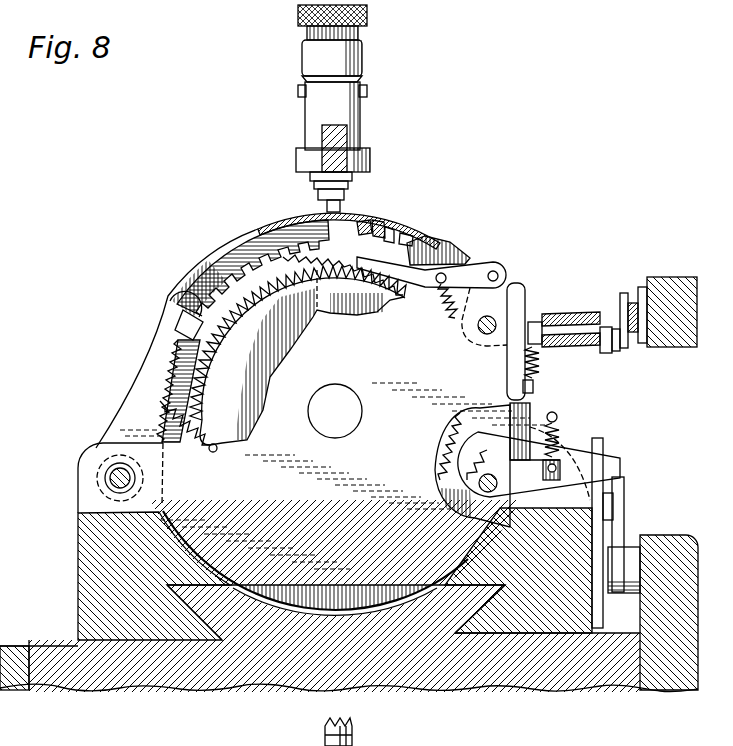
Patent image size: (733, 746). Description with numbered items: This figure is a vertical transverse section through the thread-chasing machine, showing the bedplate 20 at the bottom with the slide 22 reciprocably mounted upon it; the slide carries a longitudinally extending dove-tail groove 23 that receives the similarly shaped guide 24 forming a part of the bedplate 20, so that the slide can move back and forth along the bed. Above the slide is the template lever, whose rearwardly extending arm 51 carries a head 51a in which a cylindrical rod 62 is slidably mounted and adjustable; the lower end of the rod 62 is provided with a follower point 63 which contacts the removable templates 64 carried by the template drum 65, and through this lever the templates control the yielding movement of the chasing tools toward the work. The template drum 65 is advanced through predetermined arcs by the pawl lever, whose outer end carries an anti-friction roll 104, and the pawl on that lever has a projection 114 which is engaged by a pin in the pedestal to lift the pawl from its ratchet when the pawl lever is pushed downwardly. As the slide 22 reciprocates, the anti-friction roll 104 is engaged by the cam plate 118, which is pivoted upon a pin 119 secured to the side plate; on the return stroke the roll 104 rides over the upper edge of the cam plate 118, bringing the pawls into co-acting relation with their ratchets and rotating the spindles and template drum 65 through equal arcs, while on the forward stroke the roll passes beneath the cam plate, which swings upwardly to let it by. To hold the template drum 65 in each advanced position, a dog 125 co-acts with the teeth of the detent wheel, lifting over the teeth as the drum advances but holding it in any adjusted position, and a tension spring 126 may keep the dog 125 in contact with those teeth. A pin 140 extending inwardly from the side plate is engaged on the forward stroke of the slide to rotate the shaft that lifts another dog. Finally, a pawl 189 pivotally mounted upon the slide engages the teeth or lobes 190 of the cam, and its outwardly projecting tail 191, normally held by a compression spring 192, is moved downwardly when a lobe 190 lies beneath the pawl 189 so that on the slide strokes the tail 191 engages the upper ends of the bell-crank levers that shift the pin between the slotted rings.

The bedplate 20 is at (592, 684).
The slide 22 is at (93, 563).
The dove-tail groove 23 is at (187, 605).
The guide 24 is at (470, 597).
The rearwardly extending arm 51 is at (350, 135).
The head 51a is at (357, 118).
The cylindrical rod 62 is at (352, 181).
The follower point 63 is at (344, 200).
The removable template 64 is at (392, 240).
The template drum 65 is at (277, 232).
The anti-friction roll 104 is at (610, 347).
The projection 114 is at (507, 292).
The cam plate 118 is at (620, 307).
The pin 119 is at (634, 302).
The dog 125 is at (144, 362).
The tension spring 126 is at (186, 436).
The pin 140 is at (205, 336).
The pawl 189 is at (505, 425).
The teeth or lobes 190 is at (440, 488).
The tail 191 is at (597, 446).
The compression spring 192 is at (558, 425).